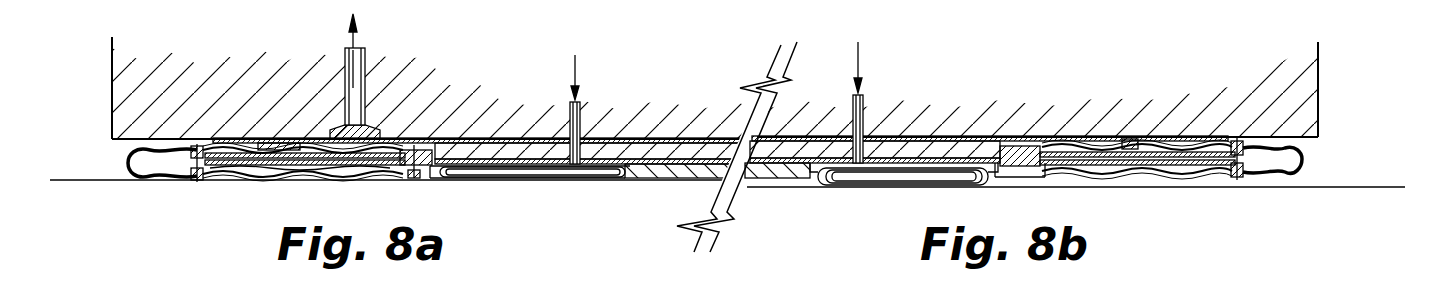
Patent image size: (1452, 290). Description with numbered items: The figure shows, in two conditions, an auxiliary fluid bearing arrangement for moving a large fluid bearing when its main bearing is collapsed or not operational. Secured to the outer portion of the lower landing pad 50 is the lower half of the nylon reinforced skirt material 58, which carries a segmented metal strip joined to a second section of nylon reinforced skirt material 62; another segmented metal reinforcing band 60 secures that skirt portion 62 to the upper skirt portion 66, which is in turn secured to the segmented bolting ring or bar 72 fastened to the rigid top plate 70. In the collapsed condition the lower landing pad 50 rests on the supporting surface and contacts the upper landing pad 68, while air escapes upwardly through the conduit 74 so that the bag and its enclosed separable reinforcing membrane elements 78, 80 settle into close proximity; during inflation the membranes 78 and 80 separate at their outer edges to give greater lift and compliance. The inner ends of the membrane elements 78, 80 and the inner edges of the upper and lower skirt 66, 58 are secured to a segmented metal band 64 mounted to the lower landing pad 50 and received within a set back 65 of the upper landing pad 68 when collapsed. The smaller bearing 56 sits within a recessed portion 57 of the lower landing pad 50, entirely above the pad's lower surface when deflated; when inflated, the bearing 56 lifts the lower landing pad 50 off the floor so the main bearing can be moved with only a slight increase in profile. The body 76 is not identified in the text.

In FIG. 8A, the lower landing pad 50 is at (653, 172).
In FIG. 8B, the lower landing pad 50 is at (777, 170).
In FIG. 8A, the smaller bearing 56 is at (578, 173).
In FIG. 8B, the smaller bearing 56 is at (918, 186).
In FIG. 8A, the recessed portion 57 is at (580, 113).
In FIG. 8B, the recessed portion 57 is at (993, 175).
In FIG. 8A, the lower half of nylon reinforced skirt material 58 is at (370, 180).
In FIG. 8B, the lower half of nylon reinforced skirt material 58 is at (1143, 176).
In FIG. 8A, the segmented metal reinforcing band 60 is at (197, 147).
In FIG. 8B, the segmented metal reinforcing band 60 is at (1243, 177).
In FIG. 8A, the second section of nylon reinforced skirt material 62 is at (128, 162).
In FIG. 8B, the second section of nylon reinforced skirt material 62 is at (1302, 160).
In FIG. 8A, the segmented metal band 64 is at (414, 157).
In FIG. 8A, the set back 65 is at (433, 173).
In FIG. 8A, the upper skirt portion 66 is at (232, 140).
In FIG. 8B, the upper skirt portion 66 is at (1210, 141).
In FIG. 8A, the upper landing pad 68 is at (512, 156).
In FIG. 8B, the upper landing pad 68 is at (813, 145).
In FIG. 8A, the rigid top plate 70 is at (670, 141).
In FIG. 8B, the rigid top plate 70 is at (882, 139).
In FIG. 8A, the segmented bolting ring or bar 72 is at (294, 152).
In FIG. 8B, the segmented bolting ring or bar 72 is at (1130, 140).
In FIG. 8A, the conduit 74 is at (365, 77).
In FIG. 8A, the load body 76 is at (112, 80).
In FIG. 8B, the load body 76 is at (1318, 60).
In FIG. 8A, the membrane element 78 is at (258, 152).
In FIG. 8A, the membrane element 80 is at (250, 147).